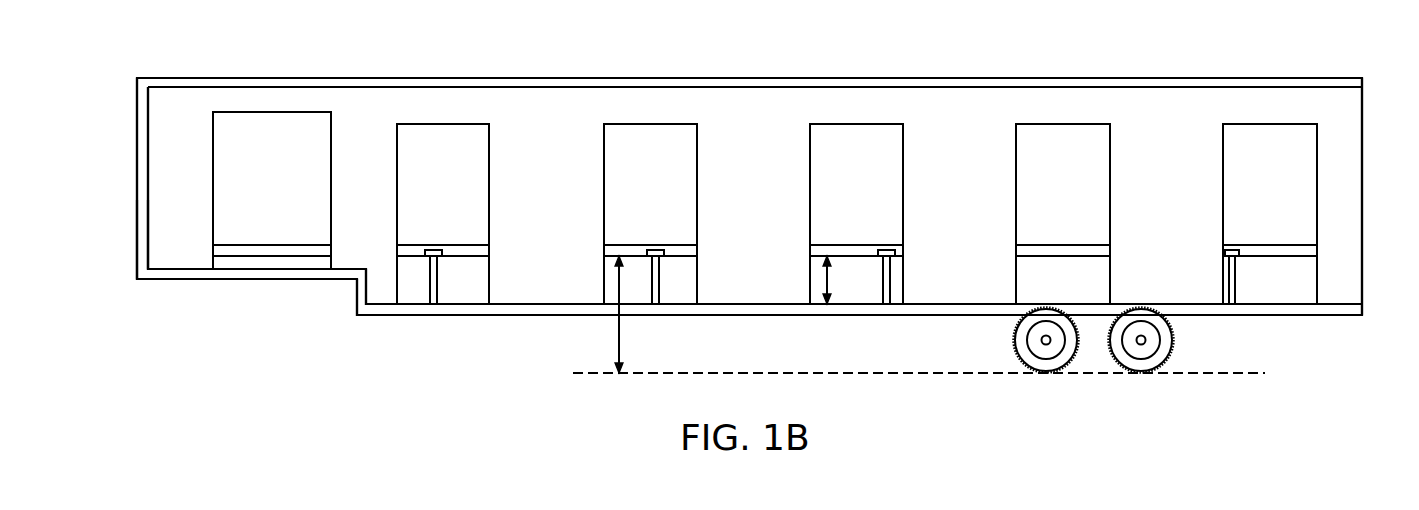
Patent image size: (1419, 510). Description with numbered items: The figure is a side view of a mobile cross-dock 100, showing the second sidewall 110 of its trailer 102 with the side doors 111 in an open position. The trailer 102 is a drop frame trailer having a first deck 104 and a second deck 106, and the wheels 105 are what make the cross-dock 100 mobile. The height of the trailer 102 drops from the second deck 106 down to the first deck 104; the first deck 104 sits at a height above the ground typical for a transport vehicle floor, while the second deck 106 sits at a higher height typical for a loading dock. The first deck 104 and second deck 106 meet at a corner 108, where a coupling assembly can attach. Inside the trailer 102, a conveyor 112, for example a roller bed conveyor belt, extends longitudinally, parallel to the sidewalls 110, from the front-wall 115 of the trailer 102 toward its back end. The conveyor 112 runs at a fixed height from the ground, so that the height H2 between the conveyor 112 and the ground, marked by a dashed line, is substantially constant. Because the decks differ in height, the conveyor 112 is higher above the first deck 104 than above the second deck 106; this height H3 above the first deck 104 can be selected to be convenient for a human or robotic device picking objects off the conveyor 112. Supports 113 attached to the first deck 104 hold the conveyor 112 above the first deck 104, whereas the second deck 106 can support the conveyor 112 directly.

The mobile cross-dock 100 is at (197, 57).
The trailer 102 is at (1015, 78).
The first deck 104 is at (948, 351).
The wheels 105 is at (1165, 351).
The second deck 106 is at (223, 309).
The corner 108 is at (357, 318).
The sidewalls 110 is at (627, 108).
The side doors 111 is at (840, 124).
The conveyor 112 is at (129, 199).
The supports 113 is at (1235, 284).
The front-wall 115 is at (1374, 178).
The height of the conveyor above the ground H2 is at (638, 314).
The height of the conveyor above the first deck H3 is at (846, 280).